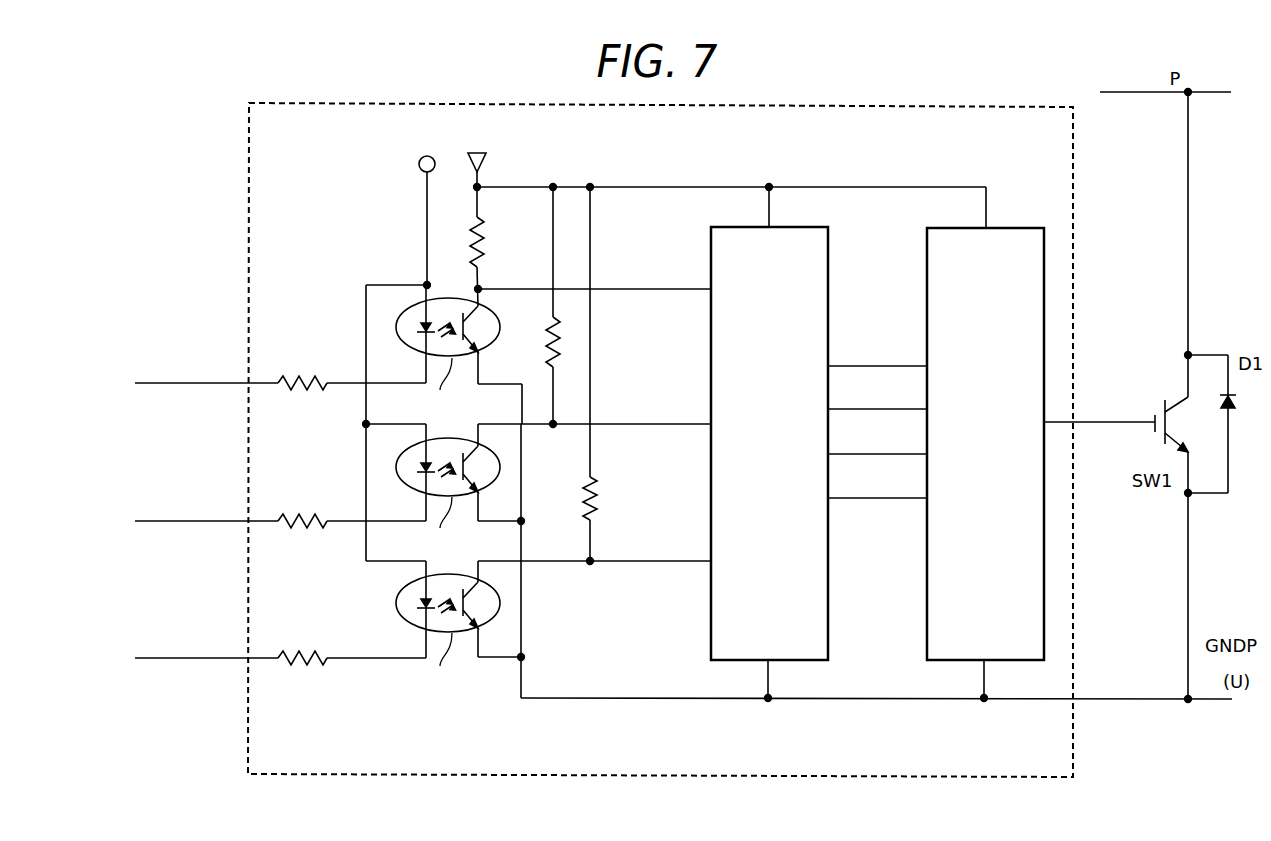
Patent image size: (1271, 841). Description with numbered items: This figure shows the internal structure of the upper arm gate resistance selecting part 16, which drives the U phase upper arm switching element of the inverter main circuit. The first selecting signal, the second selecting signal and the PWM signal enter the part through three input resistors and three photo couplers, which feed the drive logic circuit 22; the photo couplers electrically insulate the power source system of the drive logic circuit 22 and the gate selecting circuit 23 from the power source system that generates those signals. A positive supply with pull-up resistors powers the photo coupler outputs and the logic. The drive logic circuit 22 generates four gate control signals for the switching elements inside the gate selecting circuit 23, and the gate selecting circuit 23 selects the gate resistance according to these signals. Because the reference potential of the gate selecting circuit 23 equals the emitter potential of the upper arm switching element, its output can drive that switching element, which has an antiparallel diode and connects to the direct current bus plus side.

The upper arm gate resistance selecting part 16 is at (893, 777).
The drive logic circuit 22 is at (710, 593).
The gate selecting circuit 23 is at (926, 593).